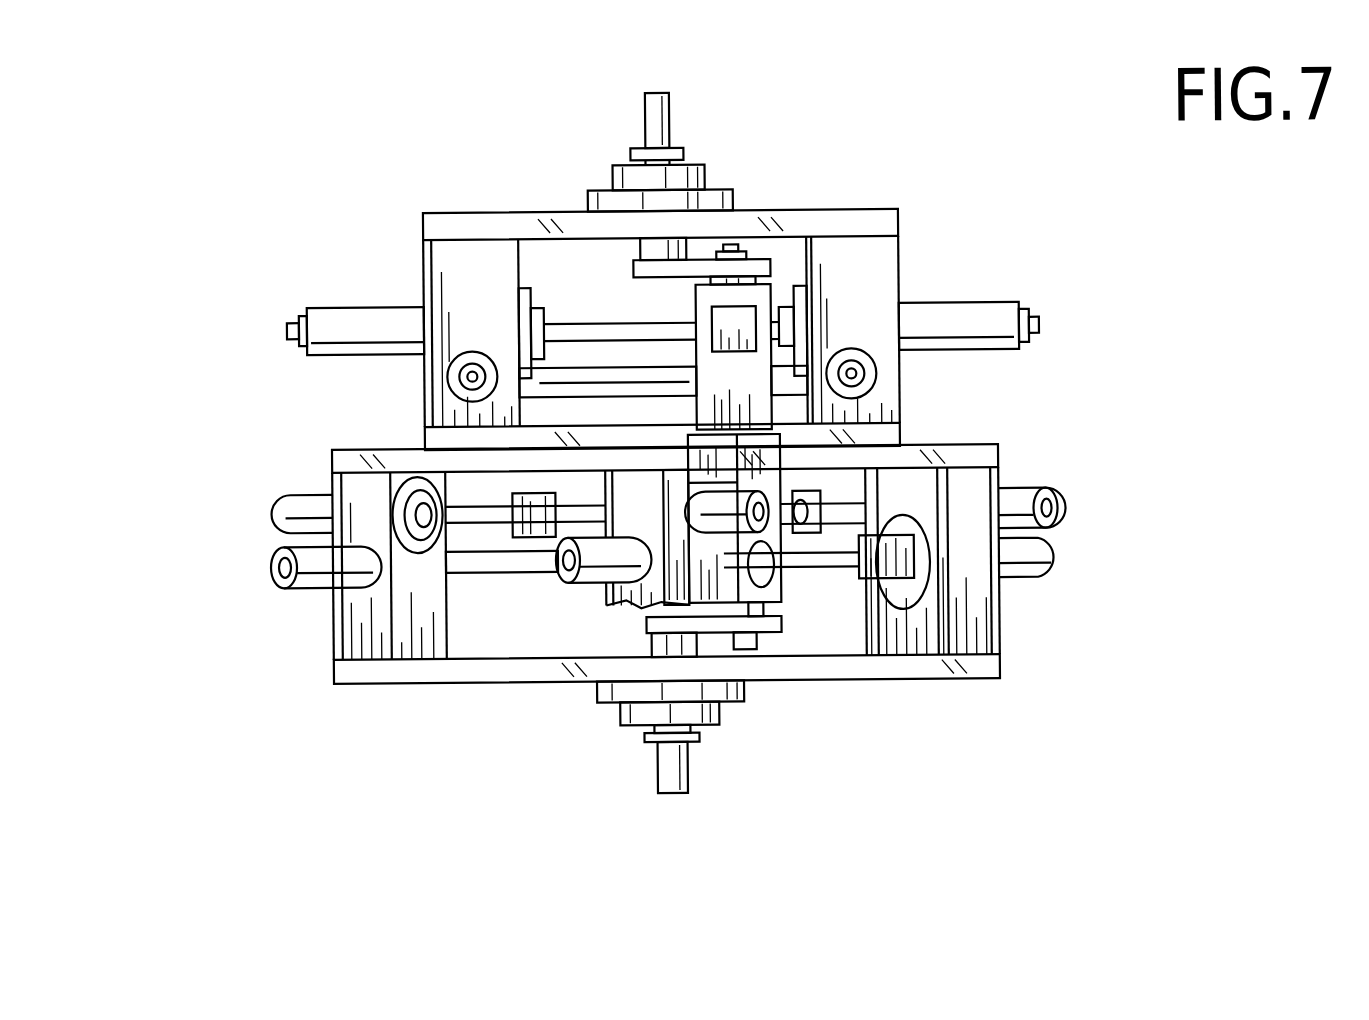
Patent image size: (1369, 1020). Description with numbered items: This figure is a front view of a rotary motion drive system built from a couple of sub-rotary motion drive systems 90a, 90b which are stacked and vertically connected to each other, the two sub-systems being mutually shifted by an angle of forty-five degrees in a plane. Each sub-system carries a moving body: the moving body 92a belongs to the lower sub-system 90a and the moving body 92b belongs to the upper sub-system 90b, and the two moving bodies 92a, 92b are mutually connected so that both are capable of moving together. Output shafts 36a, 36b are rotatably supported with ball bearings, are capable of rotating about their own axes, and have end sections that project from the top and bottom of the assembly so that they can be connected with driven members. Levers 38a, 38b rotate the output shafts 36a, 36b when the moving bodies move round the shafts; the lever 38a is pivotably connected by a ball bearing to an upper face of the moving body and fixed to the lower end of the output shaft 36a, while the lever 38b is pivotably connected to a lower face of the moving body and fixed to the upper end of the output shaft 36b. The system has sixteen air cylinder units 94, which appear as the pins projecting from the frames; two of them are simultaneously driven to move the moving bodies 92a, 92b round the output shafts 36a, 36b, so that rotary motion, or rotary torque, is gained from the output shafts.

The output shaft 36a is at (670, 112).
The output shaft 36b is at (687, 767).
The lever 38a is at (758, 263).
The lever 38b is at (645, 624).
The sub-rotary motion drive system 90a is at (320, 646).
The sub-rotary motion drive system 90b is at (463, 200).
The moving body 92a is at (755, 457).
The moving body 92b is at (750, 371).
The air cylinder unit 94 is at (332, 306).